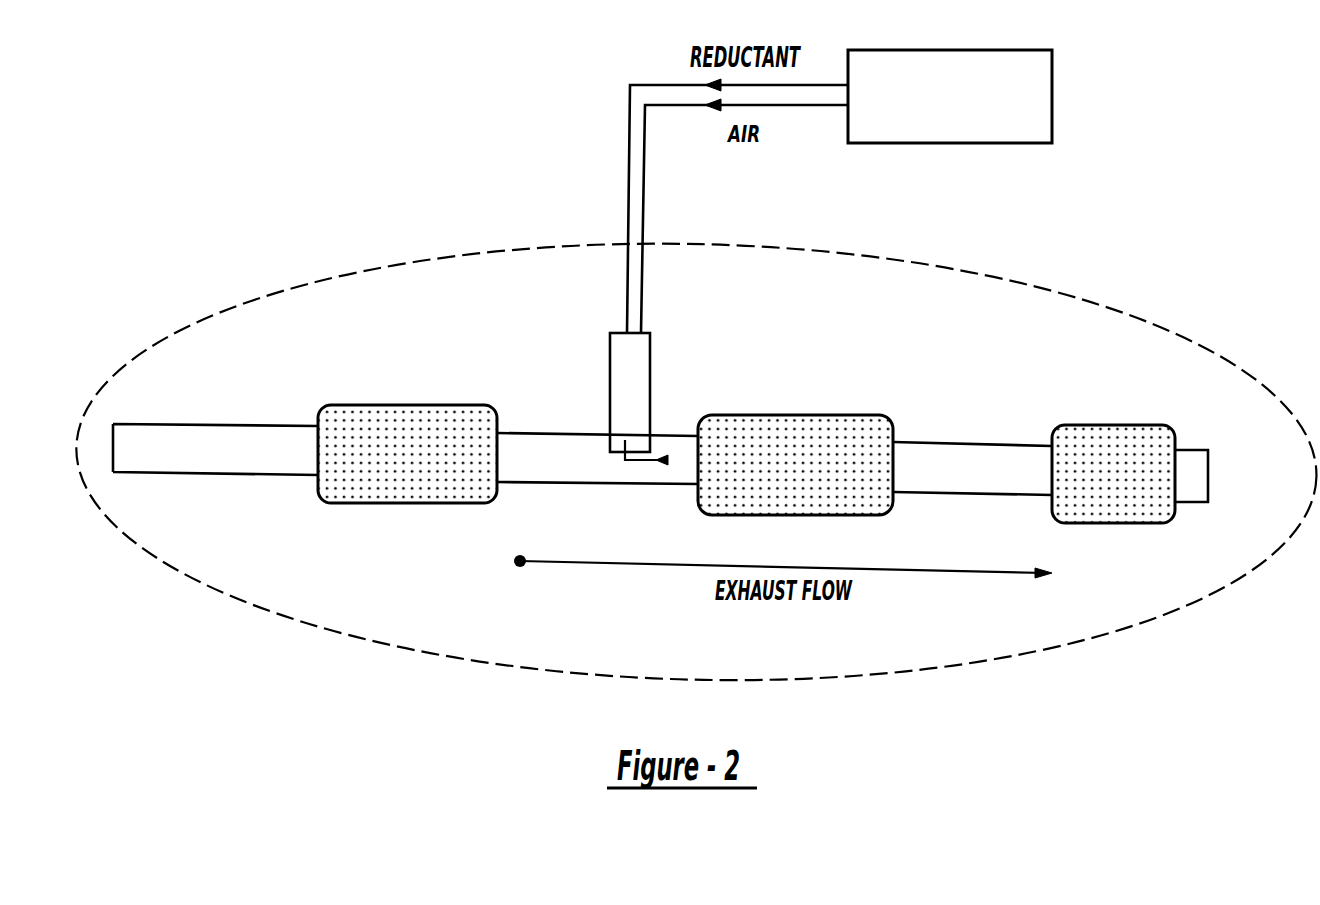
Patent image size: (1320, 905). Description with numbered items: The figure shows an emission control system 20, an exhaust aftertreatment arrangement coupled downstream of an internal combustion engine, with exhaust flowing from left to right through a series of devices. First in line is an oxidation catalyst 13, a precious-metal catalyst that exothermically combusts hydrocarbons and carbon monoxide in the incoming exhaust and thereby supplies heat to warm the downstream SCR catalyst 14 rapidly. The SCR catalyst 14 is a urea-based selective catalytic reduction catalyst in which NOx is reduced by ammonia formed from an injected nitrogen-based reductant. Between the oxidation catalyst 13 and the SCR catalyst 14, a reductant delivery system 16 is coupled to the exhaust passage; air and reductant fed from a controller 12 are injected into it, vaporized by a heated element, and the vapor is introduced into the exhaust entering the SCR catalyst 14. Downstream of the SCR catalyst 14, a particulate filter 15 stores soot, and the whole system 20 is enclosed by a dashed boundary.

The controller 12 is at (1052, 101).
The oxidation catalyst 13 is at (420, 503).
The SCR catalyst 14 is at (817, 516).
The particulate filter 15 is at (1135, 523).
The reductant delivery system 16 is at (652, 372).
The emission control system 20 is at (812, 250).